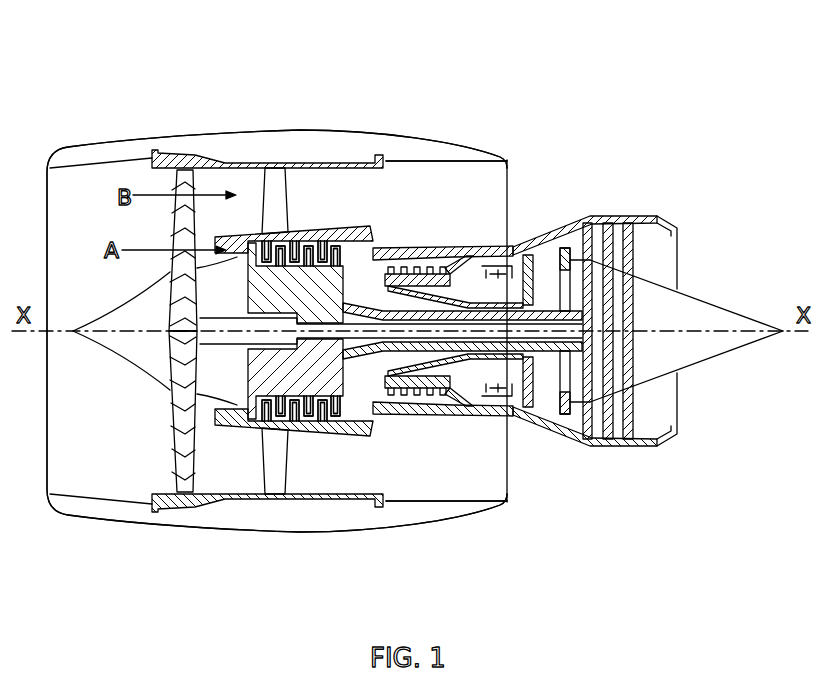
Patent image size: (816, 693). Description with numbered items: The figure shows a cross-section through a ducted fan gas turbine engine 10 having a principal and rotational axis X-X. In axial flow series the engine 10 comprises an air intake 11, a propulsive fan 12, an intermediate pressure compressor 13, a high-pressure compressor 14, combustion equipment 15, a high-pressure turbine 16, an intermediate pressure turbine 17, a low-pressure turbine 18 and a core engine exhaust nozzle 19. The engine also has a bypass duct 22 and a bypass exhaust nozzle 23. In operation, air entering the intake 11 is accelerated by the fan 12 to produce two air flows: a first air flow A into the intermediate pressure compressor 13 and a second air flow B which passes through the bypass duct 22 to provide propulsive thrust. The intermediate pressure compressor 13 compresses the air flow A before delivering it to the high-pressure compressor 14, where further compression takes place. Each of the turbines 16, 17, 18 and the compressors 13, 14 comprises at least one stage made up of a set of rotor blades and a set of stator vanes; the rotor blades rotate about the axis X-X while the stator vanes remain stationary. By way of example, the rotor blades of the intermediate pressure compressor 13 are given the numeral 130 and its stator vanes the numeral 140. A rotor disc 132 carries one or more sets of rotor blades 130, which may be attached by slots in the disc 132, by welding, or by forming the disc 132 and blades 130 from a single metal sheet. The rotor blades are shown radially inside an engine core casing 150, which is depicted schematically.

The ducted fan gas turbine engine 10 is at (94, 100).
The air intake 11 is at (97, 163).
The propulsive fan 12 is at (180, 455).
The intermediate pressure compressor 13 is at (310, 416).
The high-pressure compressor 14 is at (415, 265).
The combustion equipment 15 is at (473, 398).
The high-pressure turbine 16 is at (520, 413).
The intermediate pressure turbine 17 is at (567, 247).
The low-pressure turbine 18 is at (572, 430).
The core engine exhaust nozzle 19 is at (668, 220).
The bypass duct 22 is at (468, 206).
The bypass exhaust nozzle 23 is at (507, 158).
The rotor blades 130 is at (260, 418).
The rotor disc 132 is at (340, 293).
The stator vanes 140 is at (283, 418).
The engine core casing 150 is at (317, 224).